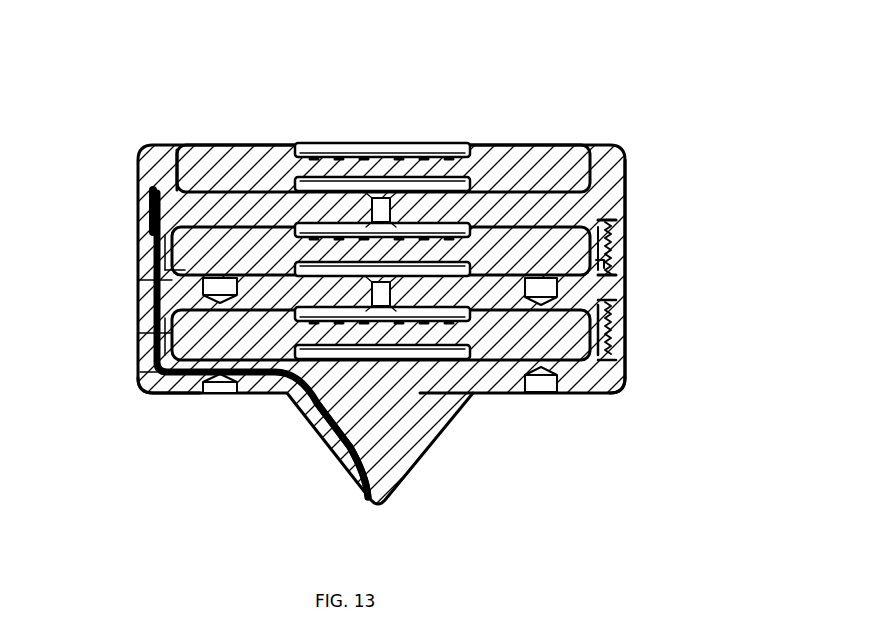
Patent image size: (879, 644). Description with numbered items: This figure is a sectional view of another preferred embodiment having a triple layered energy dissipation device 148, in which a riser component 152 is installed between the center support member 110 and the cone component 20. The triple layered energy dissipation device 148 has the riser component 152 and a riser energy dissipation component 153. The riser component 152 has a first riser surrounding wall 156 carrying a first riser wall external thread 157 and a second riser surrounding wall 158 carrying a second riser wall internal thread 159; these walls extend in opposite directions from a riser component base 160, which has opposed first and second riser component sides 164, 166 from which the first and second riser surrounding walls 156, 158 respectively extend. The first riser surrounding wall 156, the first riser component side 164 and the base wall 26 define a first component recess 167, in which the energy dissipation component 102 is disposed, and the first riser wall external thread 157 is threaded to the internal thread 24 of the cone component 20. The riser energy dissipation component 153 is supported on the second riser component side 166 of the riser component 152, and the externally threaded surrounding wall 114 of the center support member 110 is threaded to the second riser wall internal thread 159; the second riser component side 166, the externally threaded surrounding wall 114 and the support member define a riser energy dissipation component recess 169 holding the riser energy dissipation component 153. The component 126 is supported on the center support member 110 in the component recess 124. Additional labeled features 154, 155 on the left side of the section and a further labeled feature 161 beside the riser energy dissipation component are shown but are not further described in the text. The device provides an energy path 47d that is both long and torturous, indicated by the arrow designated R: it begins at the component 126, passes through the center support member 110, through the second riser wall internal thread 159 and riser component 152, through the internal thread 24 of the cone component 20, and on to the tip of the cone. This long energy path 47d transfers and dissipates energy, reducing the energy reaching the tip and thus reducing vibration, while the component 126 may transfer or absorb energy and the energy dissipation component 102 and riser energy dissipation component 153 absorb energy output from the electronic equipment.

The cone component 20 is at (428, 455).
The internal thread 24 is at (150, 395).
The base wall 26 is at (500, 380).
The energy path 47d is at (330, 420).
The arrow R is at (350, 460).
The energy dissipation component 102 is at (612, 343).
The center support member 110 is at (625, 160).
The externally threaded surrounding wall 114 is at (148, 220).
The component recess 124 is at (600, 145).
The component 126 is at (518, 143).
The triple layered energy dissipation device 148 is at (438, 143).
The riser component 152 is at (635, 272).
The riser energy dissipation component 153 is at (613, 250).
The left bracket 154 is at (148, 348).
The left spacer 155 is at (148, 282).
The first riser surrounding wall 156 is at (147, 333).
The first riser wall external thread 157 is at (145, 375).
The second riser surrounding wall 158 is at (143, 252).
The second riser wall internal thread 159 is at (150, 255).
The riser component base 160 is at (520, 222).
The spring contact leg 161 is at (612, 270).
The first riser component side 164 is at (200, 395).
The second riser component side 166 is at (184, 267).
The first component recess 167 is at (605, 385).
The riser energy dissipation component recess 169 is at (617, 222).